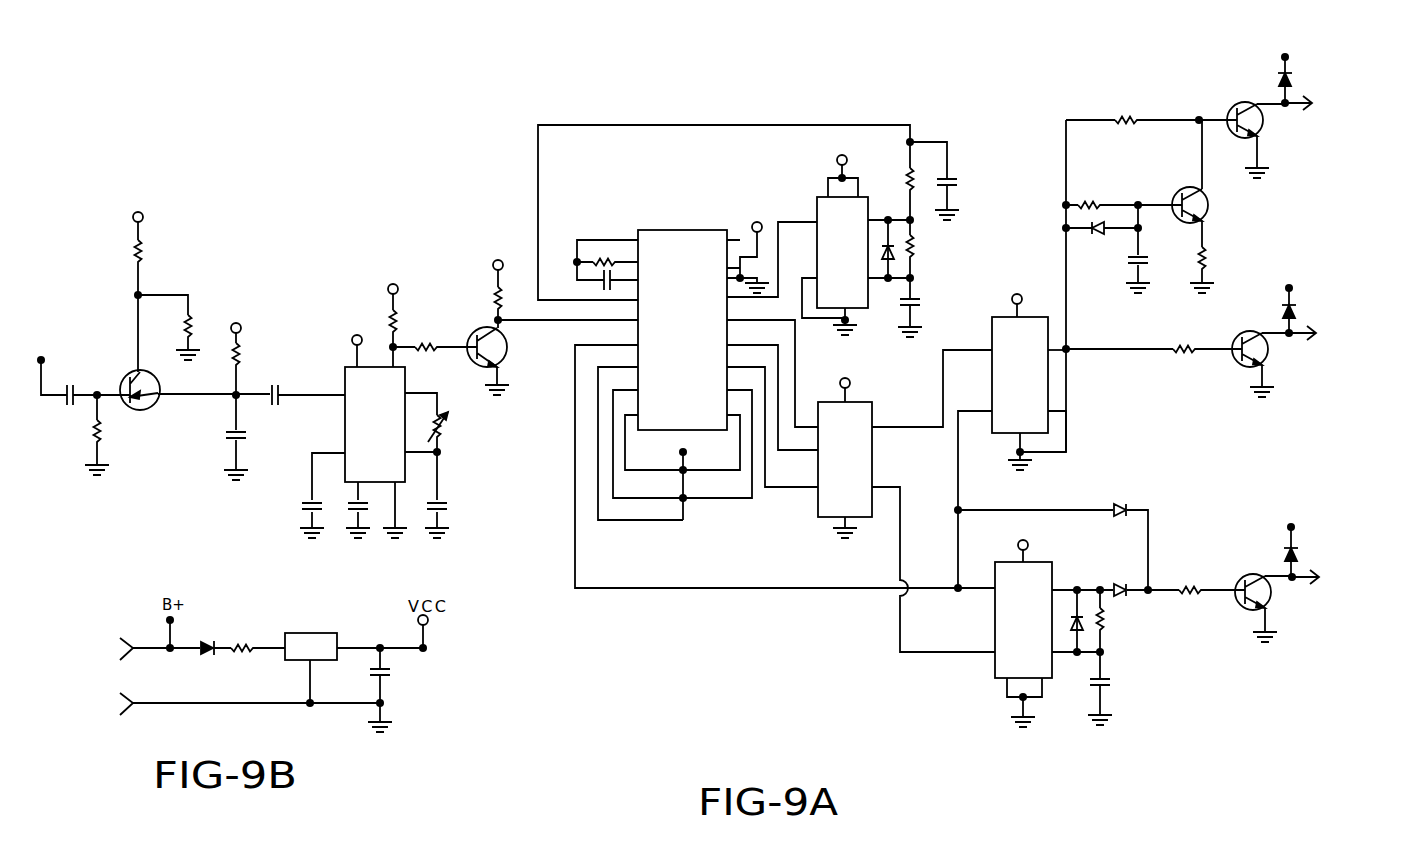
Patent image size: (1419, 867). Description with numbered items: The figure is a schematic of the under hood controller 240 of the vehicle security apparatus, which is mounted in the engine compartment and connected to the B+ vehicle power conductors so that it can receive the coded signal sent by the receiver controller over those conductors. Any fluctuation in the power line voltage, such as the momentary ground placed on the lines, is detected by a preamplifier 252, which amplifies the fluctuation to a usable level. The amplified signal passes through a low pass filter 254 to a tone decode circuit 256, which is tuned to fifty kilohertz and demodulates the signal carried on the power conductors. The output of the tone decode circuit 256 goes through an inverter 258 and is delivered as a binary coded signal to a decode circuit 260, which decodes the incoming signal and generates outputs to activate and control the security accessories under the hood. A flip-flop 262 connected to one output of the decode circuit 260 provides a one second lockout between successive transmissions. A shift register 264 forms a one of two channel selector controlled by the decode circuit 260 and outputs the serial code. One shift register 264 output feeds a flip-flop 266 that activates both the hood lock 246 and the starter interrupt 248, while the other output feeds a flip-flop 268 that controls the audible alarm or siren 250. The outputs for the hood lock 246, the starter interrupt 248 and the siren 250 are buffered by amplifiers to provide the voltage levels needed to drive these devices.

The under hood controller 240 is at (363, 167).
The hood lock 246 is at (1390, 42).
The starter interrupt 248 is at (1400, 276).
The audible alarm or siren 250 is at (1405, 502).
The preamplifier 252 is at (150, 410).
The low pass filter 254 is at (253, 415).
The tone decode circuit 256 is at (398, 468).
The inverter 258 is at (478, 330).
The decode circuit 260 is at (645, 232).
The flip-flop 262 is at (817, 199).
The shift register 264 is at (821, 511).
The flip-flop 266 is at (998, 322).
The flip-flop 268 is at (998, 677).